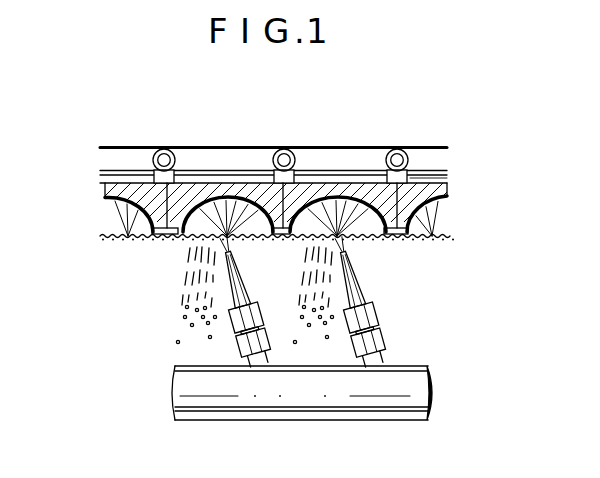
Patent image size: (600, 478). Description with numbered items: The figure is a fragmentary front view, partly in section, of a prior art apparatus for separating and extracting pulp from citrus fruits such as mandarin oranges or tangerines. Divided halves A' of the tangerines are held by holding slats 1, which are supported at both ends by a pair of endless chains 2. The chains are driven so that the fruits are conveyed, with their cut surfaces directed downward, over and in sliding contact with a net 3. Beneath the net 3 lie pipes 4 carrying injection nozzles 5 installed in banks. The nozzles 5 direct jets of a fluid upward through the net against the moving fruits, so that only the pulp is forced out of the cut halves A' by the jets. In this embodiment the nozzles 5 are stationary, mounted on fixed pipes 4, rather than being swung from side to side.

The holding slat 1 is at (197, 193).
The endless chain 2 is at (340, 160).
The net 3 is at (412, 236).
The pipe 4 is at (403, 385).
The injection nozzle 5 is at (260, 318).
The divided half of tangerine A' is at (483, 164).